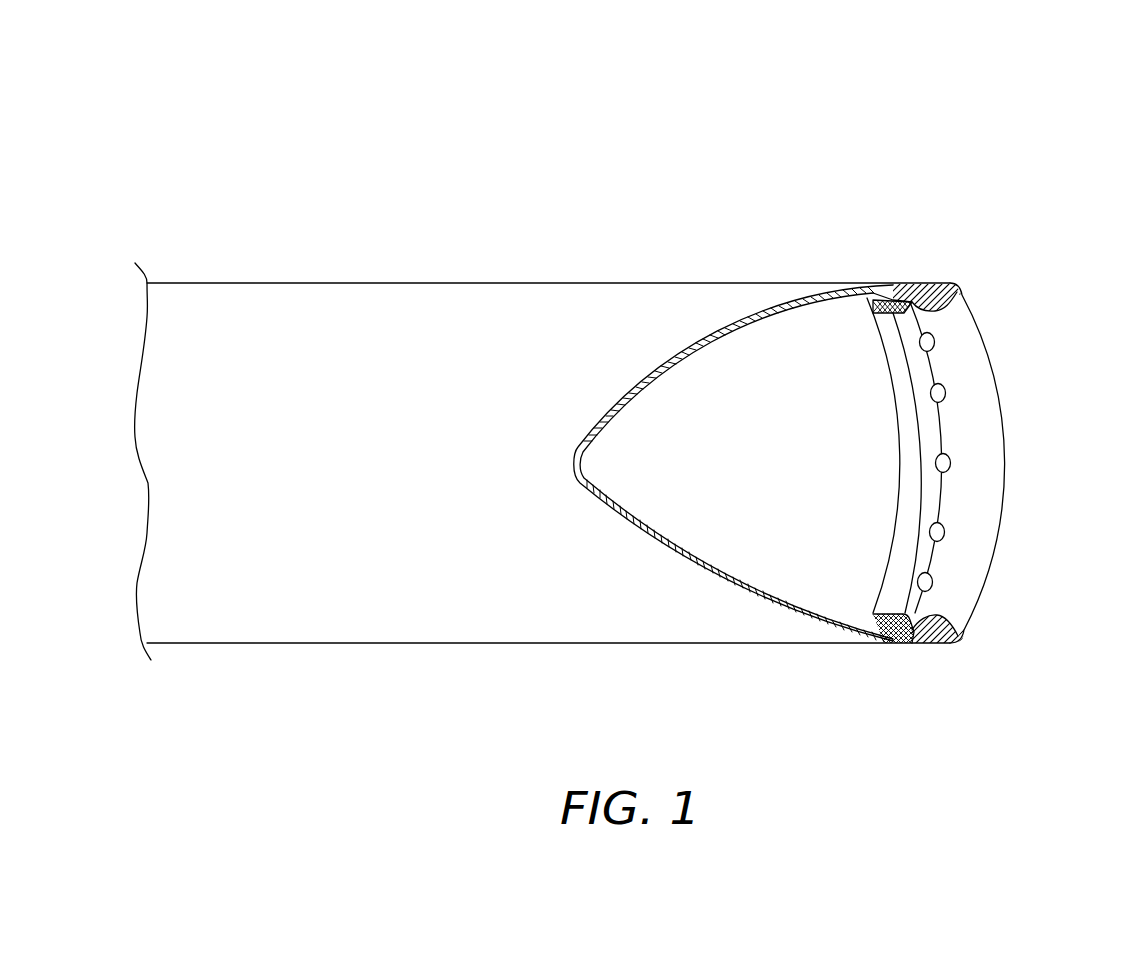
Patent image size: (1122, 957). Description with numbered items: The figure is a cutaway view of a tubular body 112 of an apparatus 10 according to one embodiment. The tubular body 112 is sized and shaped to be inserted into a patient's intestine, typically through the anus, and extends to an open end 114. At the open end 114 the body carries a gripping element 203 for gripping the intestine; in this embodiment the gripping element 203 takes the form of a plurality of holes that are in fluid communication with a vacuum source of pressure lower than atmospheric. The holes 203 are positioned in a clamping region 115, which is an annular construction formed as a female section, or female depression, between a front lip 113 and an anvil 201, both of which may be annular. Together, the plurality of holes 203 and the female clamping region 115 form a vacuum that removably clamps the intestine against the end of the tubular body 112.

The apparatus 10 is at (1013, 171).
The tubular body 112 is at (471, 283).
The anvil 201 is at (885, 355).
The front lip 113 is at (968, 298).
The gripping element 203 is at (945, 386).
The clamping region 115 is at (947, 426).
The open end 114 is at (1002, 480).